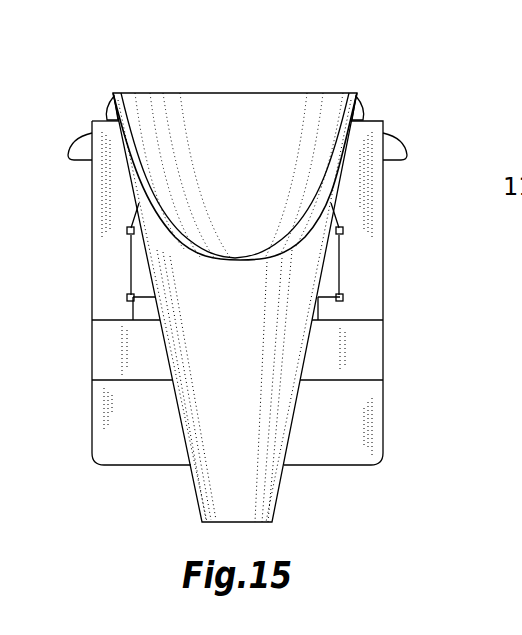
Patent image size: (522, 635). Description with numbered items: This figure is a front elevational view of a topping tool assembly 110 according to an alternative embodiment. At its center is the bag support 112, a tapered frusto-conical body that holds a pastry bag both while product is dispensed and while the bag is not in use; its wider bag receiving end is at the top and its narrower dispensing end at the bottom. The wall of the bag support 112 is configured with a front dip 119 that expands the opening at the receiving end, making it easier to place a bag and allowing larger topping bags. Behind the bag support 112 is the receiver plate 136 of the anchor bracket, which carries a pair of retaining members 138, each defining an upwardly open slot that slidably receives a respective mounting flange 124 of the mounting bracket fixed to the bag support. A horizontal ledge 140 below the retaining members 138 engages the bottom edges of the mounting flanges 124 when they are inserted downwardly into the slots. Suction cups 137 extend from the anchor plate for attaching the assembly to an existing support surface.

The topping tool assembly 110 is at (335, 72).
The bag support 112 is at (248, 362).
The front dip 119 is at (203, 260).
The mounting flanges 124 is at (140, 307).
The receiver plate 136 is at (370, 197).
The suction cups 137 is at (82, 150).
The retaining members 138 is at (137, 252).
The horizontal ledge 140 is at (365, 320).